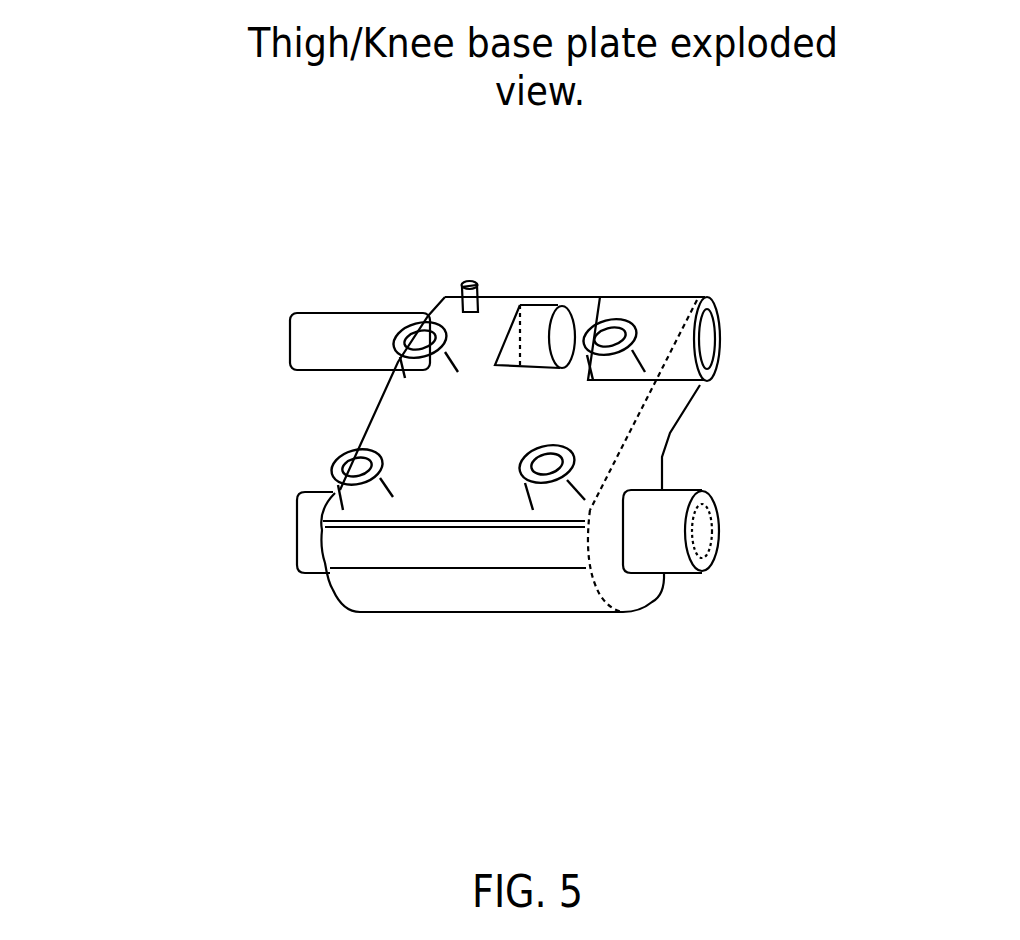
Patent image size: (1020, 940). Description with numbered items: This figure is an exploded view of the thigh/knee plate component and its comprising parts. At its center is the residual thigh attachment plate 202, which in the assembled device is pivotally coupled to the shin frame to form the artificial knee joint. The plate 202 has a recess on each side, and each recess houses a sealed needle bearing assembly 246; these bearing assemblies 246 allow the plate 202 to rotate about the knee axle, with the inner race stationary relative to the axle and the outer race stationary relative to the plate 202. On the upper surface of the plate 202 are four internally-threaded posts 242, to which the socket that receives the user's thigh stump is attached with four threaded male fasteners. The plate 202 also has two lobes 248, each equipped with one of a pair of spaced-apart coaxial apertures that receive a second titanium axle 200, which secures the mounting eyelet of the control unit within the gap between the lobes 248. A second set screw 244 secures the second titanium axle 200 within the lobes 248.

The second titanium axle 200 is at (335, 345).
The residual thigh attachment plate 202 is at (453, 500).
The internally-threaded posts 242 is at (397, 373).
The second set screw 244 is at (460, 288).
The sealed needle bearing assembly 246 is at (307, 515).
The lobes 248 is at (525, 300).